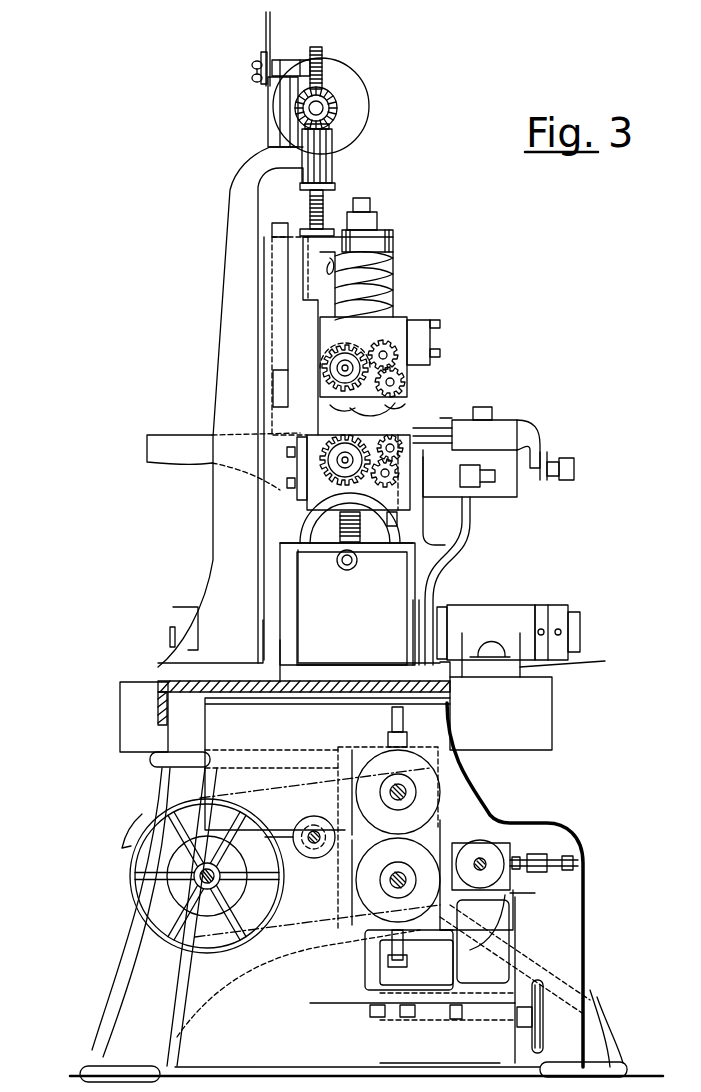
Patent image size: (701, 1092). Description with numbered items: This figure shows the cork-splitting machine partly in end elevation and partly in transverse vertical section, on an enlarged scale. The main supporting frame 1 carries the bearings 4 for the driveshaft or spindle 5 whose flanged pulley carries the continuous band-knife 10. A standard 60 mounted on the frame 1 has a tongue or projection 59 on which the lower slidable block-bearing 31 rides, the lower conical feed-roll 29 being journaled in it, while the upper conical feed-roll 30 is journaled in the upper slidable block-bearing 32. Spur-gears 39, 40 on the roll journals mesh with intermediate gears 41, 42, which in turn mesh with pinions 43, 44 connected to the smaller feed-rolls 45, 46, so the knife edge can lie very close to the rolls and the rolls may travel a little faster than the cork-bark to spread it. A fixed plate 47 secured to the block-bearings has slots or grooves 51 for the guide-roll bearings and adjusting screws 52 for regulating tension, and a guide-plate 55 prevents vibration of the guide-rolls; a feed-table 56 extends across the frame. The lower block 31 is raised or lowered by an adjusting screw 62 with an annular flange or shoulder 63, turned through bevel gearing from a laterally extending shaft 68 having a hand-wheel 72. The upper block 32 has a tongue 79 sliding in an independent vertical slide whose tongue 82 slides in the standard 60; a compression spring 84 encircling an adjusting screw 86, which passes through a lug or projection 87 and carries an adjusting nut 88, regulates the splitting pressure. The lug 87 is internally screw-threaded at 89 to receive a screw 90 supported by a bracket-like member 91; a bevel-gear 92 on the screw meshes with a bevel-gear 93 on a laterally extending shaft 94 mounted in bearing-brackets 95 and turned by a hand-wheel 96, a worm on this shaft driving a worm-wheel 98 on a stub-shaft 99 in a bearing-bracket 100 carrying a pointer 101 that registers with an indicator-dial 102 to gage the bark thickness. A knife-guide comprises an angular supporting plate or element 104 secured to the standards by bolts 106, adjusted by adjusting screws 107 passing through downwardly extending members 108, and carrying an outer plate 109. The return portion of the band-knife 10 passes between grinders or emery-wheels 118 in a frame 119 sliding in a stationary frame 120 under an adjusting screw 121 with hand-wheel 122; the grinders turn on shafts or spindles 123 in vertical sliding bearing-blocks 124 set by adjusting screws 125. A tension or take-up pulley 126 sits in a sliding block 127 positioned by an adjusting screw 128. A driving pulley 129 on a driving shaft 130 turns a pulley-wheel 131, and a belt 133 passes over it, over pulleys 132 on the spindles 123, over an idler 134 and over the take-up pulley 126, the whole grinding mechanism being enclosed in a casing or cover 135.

The main supporting frame 1 is at (158, 692).
The bearings 4 is at (182, 613).
The driveshaft or spindle 5 is at (170, 633).
The band-knife 10 is at (422, 610).
The lower conical feed-roll 29 is at (318, 461).
The upper conical feed-roll 30 is at (330, 344).
The lower slidable block-bearing 31 is at (320, 504).
The upper slidable block-bearing 32 is at (400, 325).
The spur-gear 39 is at (330, 477).
The spur-gear 40 is at (330, 378).
The intermediate gear 41 is at (400, 477).
The intermediate gear 42 is at (404, 352).
The pinion 43 is at (402, 427).
The pinion 44 is at (404, 384).
The smaller feed-roll 45 is at (470, 458).
The smaller feed-roll 46 is at (367, 408).
The stationary or fixed plate 47 is at (390, 353).
The slot or groove 51 is at (468, 545).
The adjusting screw 52 is at (393, 516).
The guide-plate 55 is at (440, 324).
The feed-table 56 is at (150, 448).
The tongue or projection 59 is at (414, 524).
The standard 60 is at (240, 196).
The adjusting screw 62 is at (367, 542).
The annular flange or shoulder 63 is at (336, 540).
The laterally extending shaft 68 is at (347, 570).
The hand-wheel 72 is at (386, 538).
The tongue 79 is at (295, 379).
The tongue 82 is at (283, 258).
The compression spring 84 is at (395, 284).
The adjusting screw 86 is at (372, 206).
The lug or projection 87 is at (395, 244).
The adjusting nut 88 is at (380, 220).
The internally screw-threaded portion 89 is at (333, 274).
The screw 90 is at (325, 207).
The bracket-like member 91 is at (336, 180).
The bevel-gear 92 is at (334, 140).
The bevel-gear 93 is at (338, 111).
The laterally extending shaft 94 is at (321, 107).
The bearing-bracket 95 is at (298, 124).
The hand-wheel 96 is at (355, 137).
The worm-wheel 98 is at (320, 50).
The stub-shaft 99 is at (254, 73).
The bearing-bracket 100 is at (295, 68).
The pointer 101 is at (262, 30).
The indicator-dial 102 is at (272, 40).
The supporting plate or element 104 is at (512, 418).
The bolt 106 is at (486, 407).
The adjusting screw 107 is at (563, 478).
The downwardly extending member 108 is at (536, 447).
The outer plate 109 is at (445, 420).
The grinder or emery-wheel 118 is at (360, 768).
The frame 119 is at (507, 968).
The stationary frame 120 is at (313, 1022).
The adjusting screw 121 is at (468, 1020).
The hand-wheel 122 is at (547, 1030).
The shaft or spindle 123 is at (404, 795).
The vertical sliding bearing-block 124 is at (430, 767).
The adjusting screw 125 is at (390, 714).
The tension or take-up pulley 126 is at (497, 853).
The sliding block 127 is at (507, 878).
The adjusting screw 128 is at (580, 860).
The driving pulley 129 is at (196, 908).
The driving shaft 130 is at (203, 878).
The pulley-wheel 131 is at (130, 860).
The pulley 132 is at (400, 872).
The belt 133 is at (330, 820).
The idler 134 is at (310, 858).
The casing or cover 135 is at (270, 702).